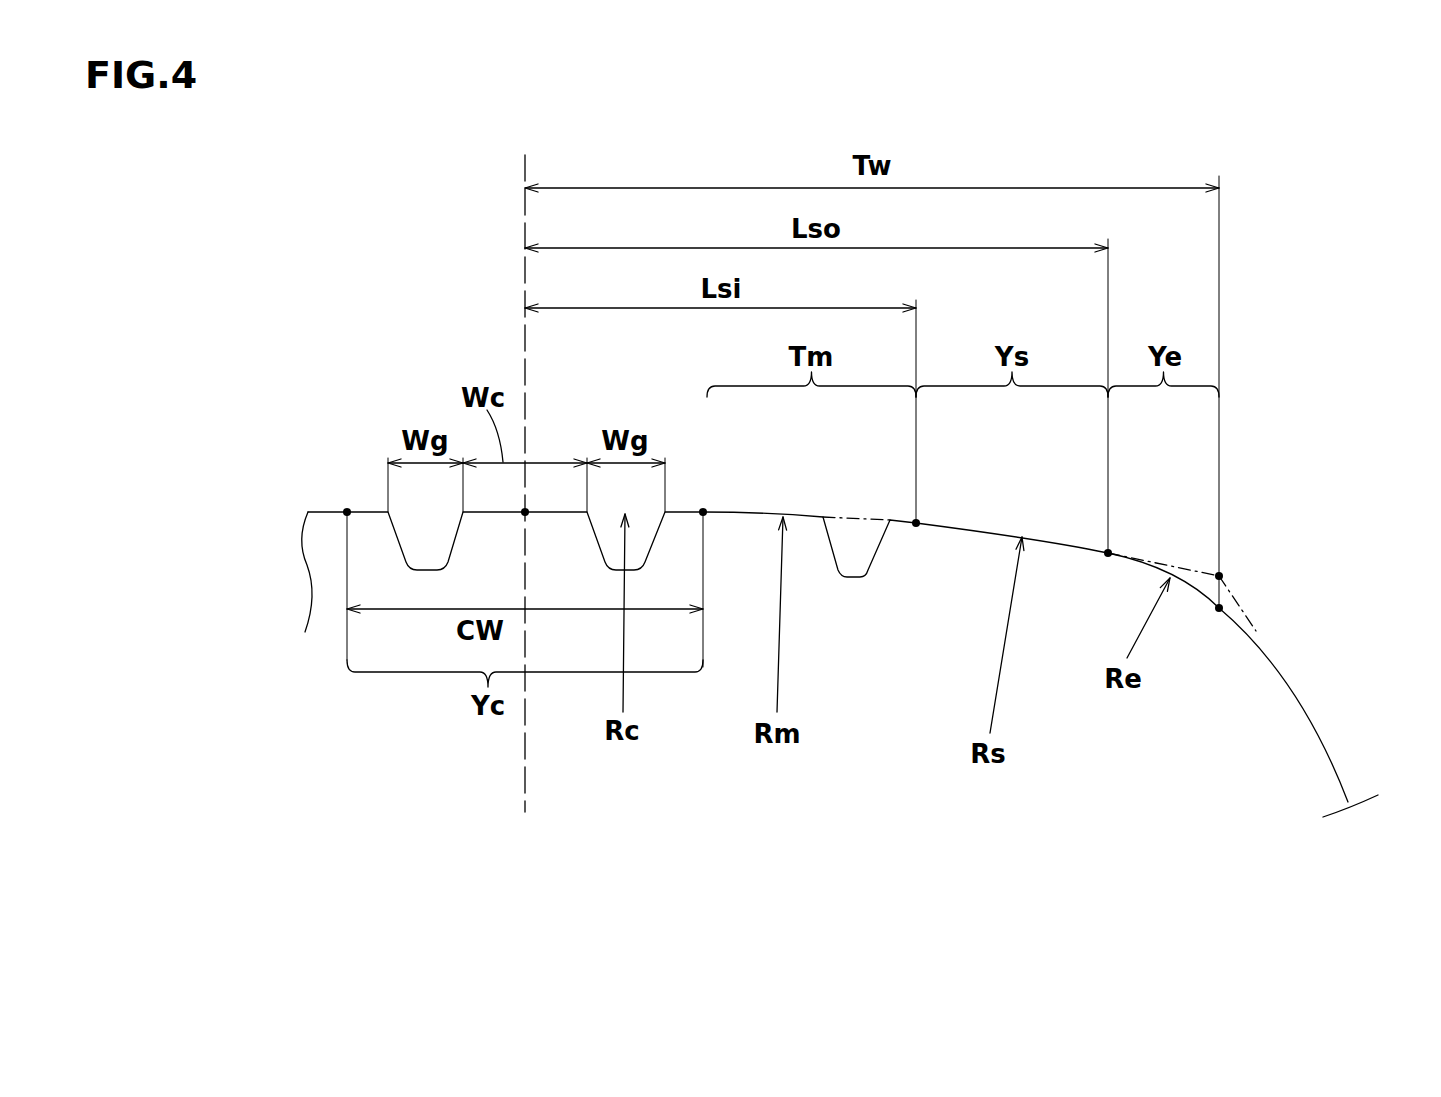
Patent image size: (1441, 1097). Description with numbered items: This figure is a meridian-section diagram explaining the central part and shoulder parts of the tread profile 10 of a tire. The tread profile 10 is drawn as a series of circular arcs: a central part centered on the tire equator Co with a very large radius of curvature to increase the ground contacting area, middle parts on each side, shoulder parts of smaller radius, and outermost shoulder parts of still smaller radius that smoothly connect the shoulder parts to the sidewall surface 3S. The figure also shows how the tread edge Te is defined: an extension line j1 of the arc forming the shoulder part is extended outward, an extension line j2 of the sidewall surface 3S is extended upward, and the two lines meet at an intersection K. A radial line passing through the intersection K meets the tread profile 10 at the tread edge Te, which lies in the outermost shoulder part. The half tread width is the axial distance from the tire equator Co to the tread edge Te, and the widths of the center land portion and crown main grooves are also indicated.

The tread profile 10 is at (745, 510).
The sidewall surface 3S is at (1317, 730).
The tread edge Te is at (1217, 612).
The intersection K is at (1222, 573).
The extension line of the tread surface j1 is at (1167, 565).
The extension line of the sidewall surface j2 is at (1250, 622).
The tire equator Co is at (525, 500).